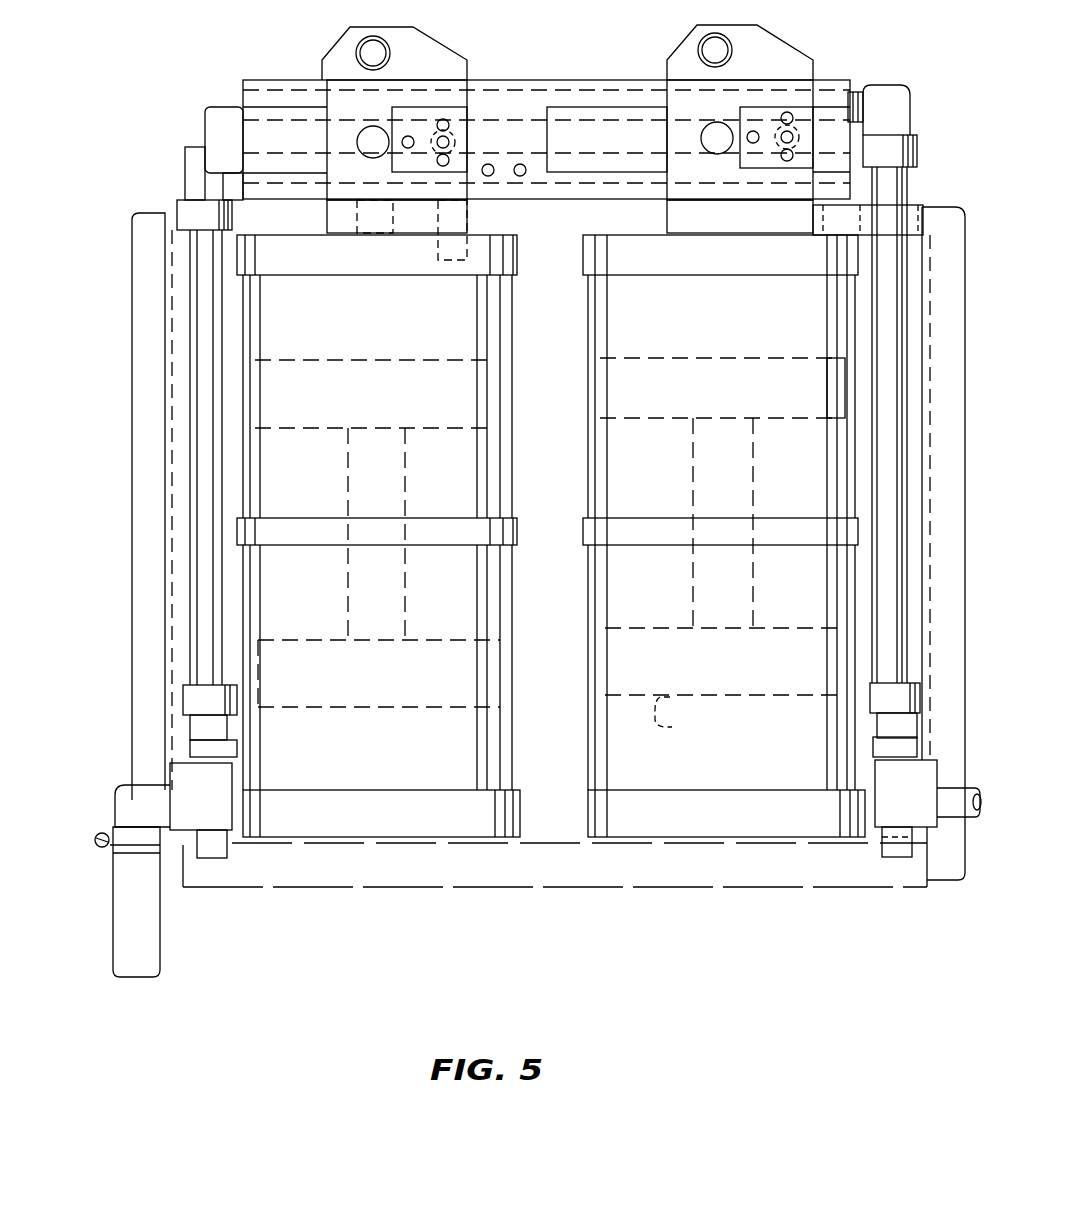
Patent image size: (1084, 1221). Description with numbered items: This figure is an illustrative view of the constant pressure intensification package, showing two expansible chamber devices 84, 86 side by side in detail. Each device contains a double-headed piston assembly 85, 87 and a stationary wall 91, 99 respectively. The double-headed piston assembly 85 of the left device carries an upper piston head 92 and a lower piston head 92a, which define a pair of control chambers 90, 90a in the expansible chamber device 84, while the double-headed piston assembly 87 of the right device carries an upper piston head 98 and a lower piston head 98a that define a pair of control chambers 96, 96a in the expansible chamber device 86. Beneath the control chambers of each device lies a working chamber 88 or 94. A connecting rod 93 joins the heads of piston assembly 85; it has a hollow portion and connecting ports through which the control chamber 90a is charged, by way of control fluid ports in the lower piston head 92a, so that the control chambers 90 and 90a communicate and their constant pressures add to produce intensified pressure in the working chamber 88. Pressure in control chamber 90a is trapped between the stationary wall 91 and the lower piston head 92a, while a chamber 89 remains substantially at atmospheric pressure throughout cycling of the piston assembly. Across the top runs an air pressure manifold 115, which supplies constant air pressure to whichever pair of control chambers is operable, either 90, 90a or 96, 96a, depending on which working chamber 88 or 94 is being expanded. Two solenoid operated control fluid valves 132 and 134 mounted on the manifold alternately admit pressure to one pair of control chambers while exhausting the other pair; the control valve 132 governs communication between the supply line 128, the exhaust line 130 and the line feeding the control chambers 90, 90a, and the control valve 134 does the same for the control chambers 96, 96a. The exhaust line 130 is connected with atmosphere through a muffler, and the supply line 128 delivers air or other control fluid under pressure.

The expansible chamber device 84 is at (165, 347).
The double-headed piston assembly 85 is at (395, 318).
The expansible chamber device 86 is at (877, 277).
The double-headed piston assembly 87 is at (808, 305).
The working chamber 88 is at (415, 586).
The chamber 89 is at (283, 72).
The control chamber 90 is at (493, 320).
The control chamber 90a is at (495, 615).
The stationary wall 91 is at (432, 525).
The upper piston head 92 is at (495, 388).
The lower piston head 92a is at (505, 667).
The connecting rod 93 is at (405, 597).
The working chamber 94 is at (705, 585).
The control chamber 96 is at (617, 326).
The control chamber 96a is at (633, 618).
The upper piston head 98 is at (700, 352).
The lower piston head 98a is at (668, 722).
The stationary wall 99 is at (635, 522).
The air pressure manifold 115 is at (550, 80).
The supply line 128 is at (888, 813).
The exhaust line 130 is at (152, 945).
The control valve 132 is at (390, 103).
The control valve 134 is at (757, 85).